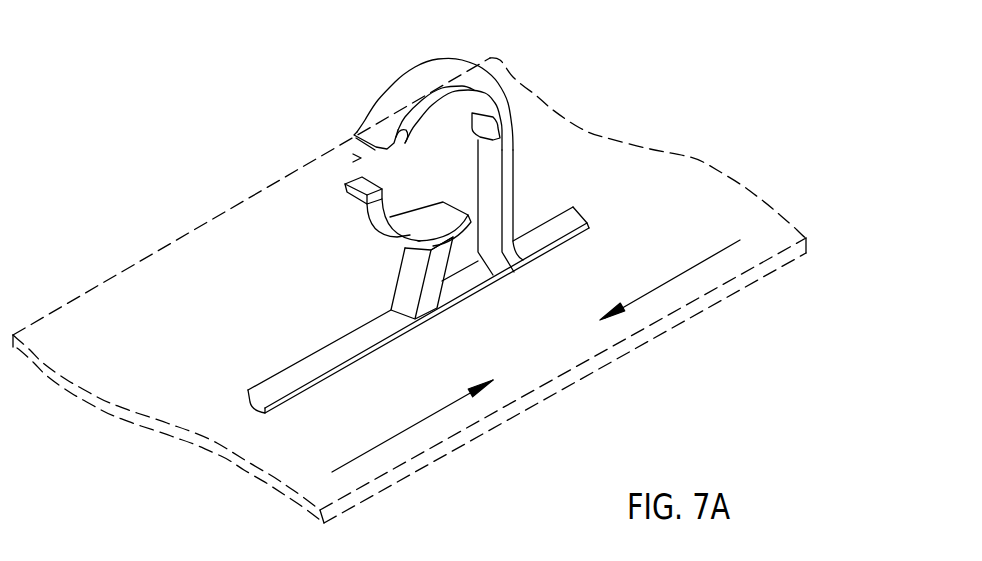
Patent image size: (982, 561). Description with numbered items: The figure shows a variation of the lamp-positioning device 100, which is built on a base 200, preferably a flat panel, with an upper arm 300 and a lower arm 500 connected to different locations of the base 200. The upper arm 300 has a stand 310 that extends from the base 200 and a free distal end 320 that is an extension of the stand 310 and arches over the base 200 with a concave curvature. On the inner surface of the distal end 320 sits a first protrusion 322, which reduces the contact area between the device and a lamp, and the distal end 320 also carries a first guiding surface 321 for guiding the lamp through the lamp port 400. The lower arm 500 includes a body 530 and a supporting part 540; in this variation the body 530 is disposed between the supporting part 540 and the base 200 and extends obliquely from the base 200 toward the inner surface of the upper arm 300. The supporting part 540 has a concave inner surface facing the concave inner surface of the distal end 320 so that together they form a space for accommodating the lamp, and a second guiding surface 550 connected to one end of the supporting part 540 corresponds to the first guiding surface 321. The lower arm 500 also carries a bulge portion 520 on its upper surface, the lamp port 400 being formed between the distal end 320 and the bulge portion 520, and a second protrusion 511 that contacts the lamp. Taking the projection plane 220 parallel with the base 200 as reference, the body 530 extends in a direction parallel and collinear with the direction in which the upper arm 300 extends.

The lamp-positioning device 100 is at (172, 110).
The base 200 is at (577, 217).
The projection plane 220 is at (500, 412).
The upper arm 300 is at (461, 170).
The stand 310 is at (510, 202).
The distal end 320 is at (438, 75).
The first guiding surface 321 is at (355, 134).
The first protrusion 322 is at (405, 142).
The lamp port 400 is at (360, 158).
The lower arm 500 is at (342, 246).
The second protrusion 511 is at (415, 235).
The bulge portion 520 is at (366, 177).
The body 530 is at (412, 290).
The supporting part 540 is at (365, 211).
The second guiding surface 550 is at (352, 194).